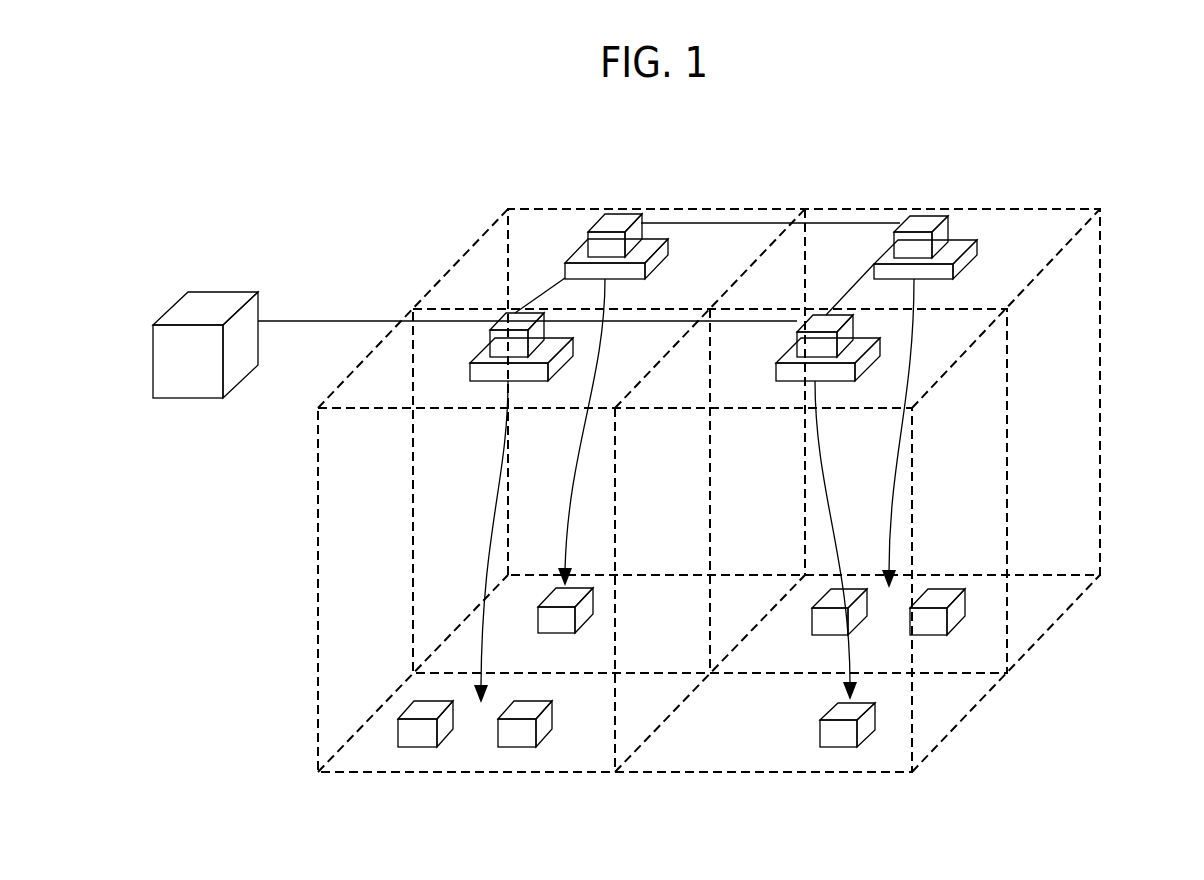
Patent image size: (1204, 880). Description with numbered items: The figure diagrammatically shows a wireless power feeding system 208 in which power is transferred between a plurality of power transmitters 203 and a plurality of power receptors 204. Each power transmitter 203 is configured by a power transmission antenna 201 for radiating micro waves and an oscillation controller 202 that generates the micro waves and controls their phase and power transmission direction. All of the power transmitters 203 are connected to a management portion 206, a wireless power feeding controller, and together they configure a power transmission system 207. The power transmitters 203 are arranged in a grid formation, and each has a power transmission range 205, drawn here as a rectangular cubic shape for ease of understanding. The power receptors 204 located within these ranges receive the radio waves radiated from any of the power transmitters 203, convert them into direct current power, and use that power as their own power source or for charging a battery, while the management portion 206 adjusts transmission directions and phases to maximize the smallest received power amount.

The power transmission antenna 201 is at (484, 348).
The oscillation controller 202 is at (517, 312).
The power transmitter 203 is at (706, 404).
The power receptor 204 is at (567, 635).
The power transmission range 205 is at (442, 292).
The management portion 206 is at (222, 292).
The power transmission system 207 is at (352, 192).
The wireless power feeding system 208 is at (1092, 170).